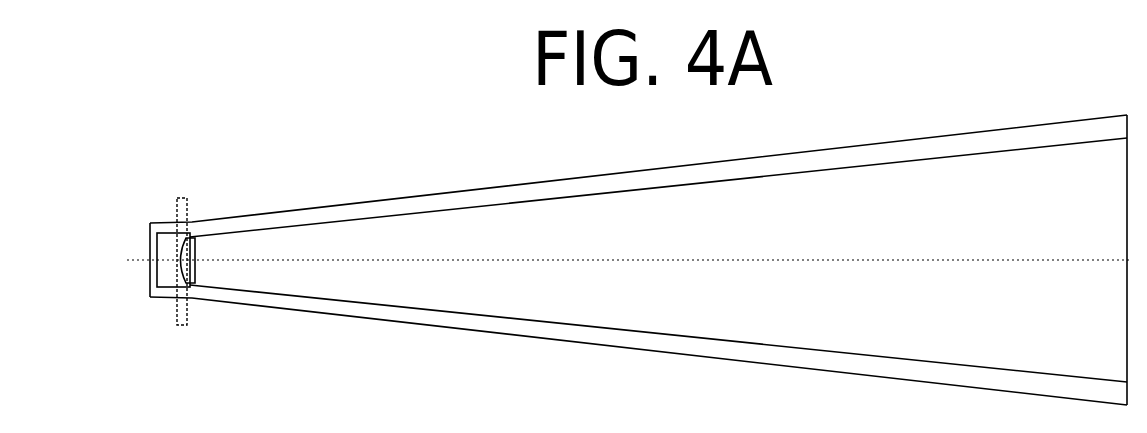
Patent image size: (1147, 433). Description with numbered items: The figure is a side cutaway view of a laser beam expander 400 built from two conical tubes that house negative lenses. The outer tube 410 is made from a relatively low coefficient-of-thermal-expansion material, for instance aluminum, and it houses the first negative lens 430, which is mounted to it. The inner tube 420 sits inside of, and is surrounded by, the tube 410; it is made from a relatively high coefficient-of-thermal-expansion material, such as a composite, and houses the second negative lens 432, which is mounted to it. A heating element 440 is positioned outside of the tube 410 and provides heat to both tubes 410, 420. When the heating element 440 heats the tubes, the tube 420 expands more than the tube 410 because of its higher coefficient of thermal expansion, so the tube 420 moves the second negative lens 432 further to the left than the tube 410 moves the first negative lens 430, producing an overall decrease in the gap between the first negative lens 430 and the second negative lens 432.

The laser beam expander 400 is at (230, 148).
The tube 410 is at (335, 206).
The tube 420 is at (378, 303).
The first negative lens 430 is at (170, 287).
The second negative lens 432 is at (198, 262).
The heating element 440 is at (182, 327).